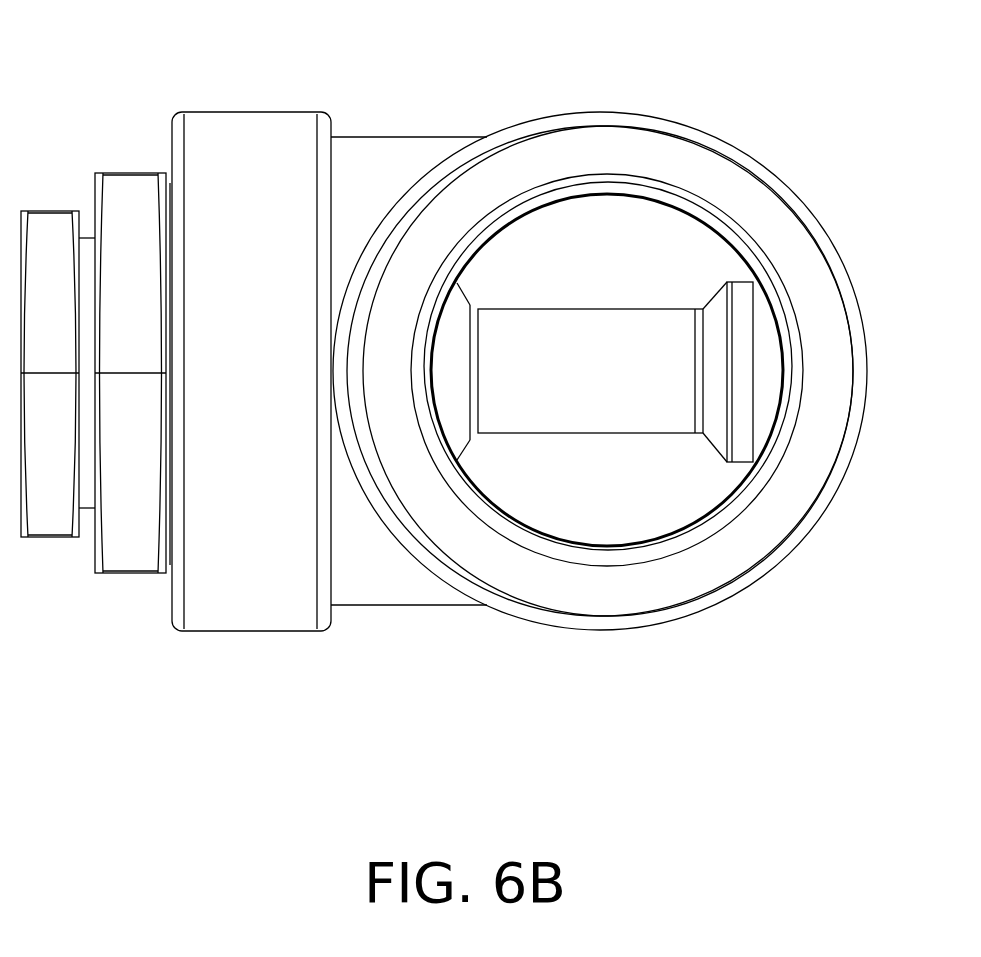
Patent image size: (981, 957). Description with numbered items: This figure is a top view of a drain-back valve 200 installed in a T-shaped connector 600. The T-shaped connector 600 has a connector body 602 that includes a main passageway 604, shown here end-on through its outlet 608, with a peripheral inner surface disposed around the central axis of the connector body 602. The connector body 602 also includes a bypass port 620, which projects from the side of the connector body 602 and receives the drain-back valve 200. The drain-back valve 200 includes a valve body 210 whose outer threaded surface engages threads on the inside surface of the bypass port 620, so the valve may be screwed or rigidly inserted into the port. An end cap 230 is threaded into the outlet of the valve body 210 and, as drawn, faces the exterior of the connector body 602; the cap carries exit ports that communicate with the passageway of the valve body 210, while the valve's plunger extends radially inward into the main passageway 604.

The T-shaped connector 600 is at (476, 352).
The drain-back valve 200 is at (173, 346).
The bypass port 620 is at (250, 137).
The end cap 230 is at (53, 523).
The valve body 210 is at (130, 550).
The connector body 602 is at (827, 225).
The main passageway 604 is at (587, 494).
The outlet 608 is at (618, 528).